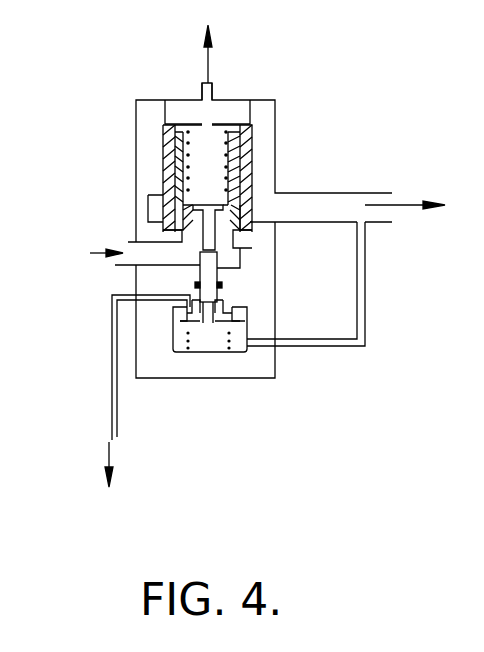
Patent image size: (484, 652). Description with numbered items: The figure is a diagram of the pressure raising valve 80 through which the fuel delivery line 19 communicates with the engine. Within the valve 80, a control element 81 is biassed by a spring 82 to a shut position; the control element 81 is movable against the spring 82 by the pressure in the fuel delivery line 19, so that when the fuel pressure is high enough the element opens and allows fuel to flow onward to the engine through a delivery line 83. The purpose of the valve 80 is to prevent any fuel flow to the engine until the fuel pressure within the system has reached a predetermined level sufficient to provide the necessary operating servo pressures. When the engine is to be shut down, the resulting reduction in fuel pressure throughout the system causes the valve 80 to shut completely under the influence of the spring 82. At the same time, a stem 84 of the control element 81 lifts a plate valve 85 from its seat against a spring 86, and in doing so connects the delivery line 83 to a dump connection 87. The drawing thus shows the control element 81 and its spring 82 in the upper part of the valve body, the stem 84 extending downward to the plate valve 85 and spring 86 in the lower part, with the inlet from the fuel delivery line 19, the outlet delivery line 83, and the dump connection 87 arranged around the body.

The pressure raising valve 80 is at (108, 120).
The control element 81 is at (250, 142).
The spring 82 is at (192, 135).
The delivery line 83 is at (323, 210).
The stem 84 is at (205, 273).
The plate valve 85 is at (187, 330).
The spring 86 is at (229, 340).
The dump connection 87 is at (115, 420).
The fuel delivery line 19 is at (130, 253).